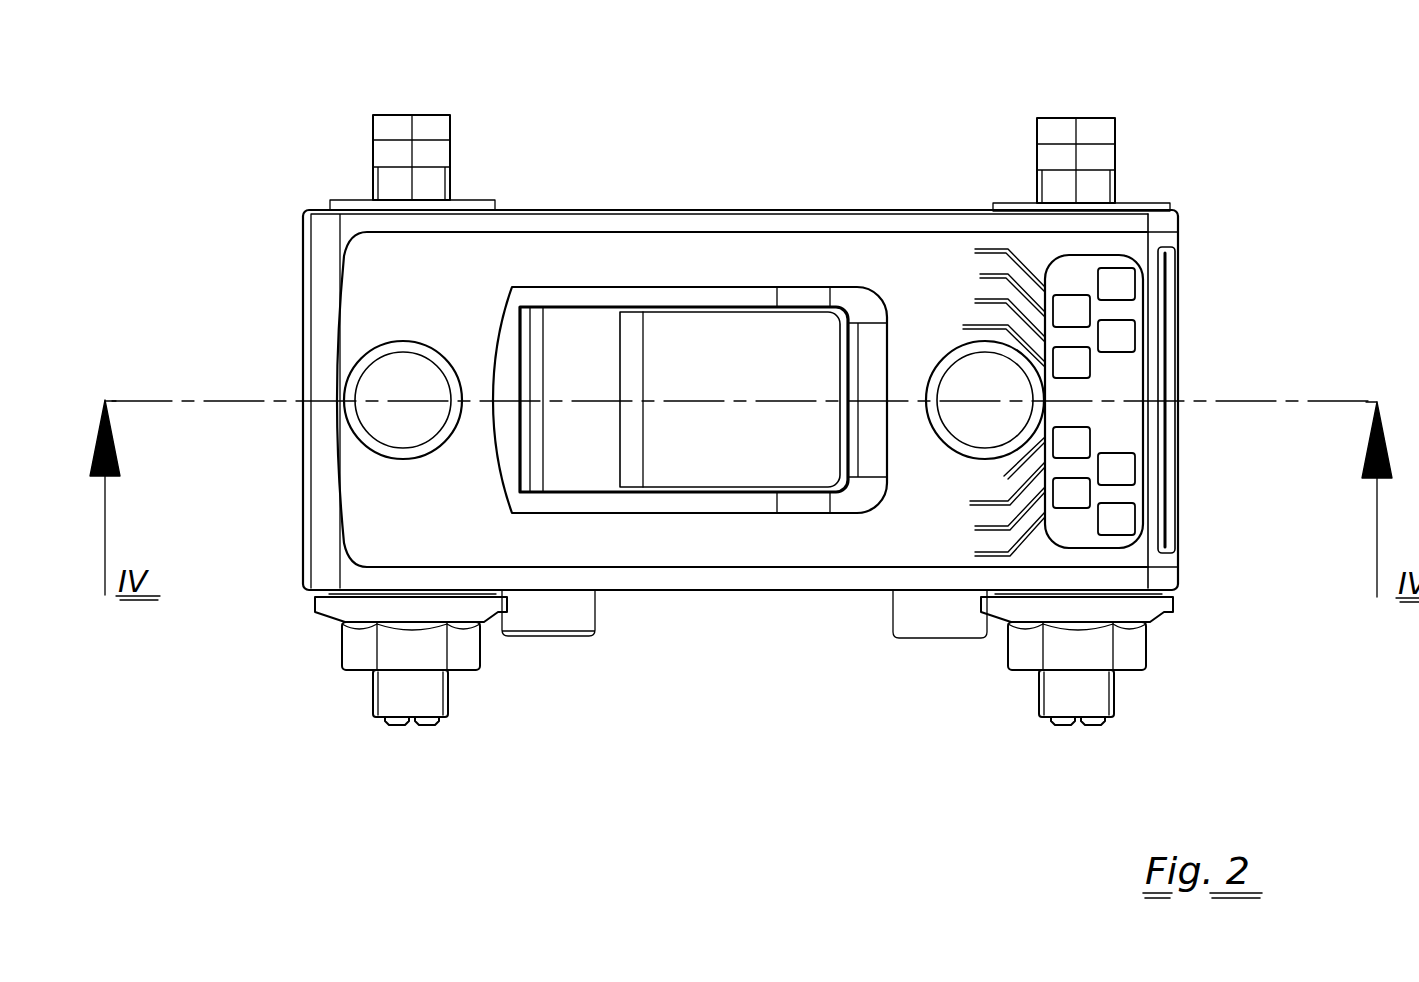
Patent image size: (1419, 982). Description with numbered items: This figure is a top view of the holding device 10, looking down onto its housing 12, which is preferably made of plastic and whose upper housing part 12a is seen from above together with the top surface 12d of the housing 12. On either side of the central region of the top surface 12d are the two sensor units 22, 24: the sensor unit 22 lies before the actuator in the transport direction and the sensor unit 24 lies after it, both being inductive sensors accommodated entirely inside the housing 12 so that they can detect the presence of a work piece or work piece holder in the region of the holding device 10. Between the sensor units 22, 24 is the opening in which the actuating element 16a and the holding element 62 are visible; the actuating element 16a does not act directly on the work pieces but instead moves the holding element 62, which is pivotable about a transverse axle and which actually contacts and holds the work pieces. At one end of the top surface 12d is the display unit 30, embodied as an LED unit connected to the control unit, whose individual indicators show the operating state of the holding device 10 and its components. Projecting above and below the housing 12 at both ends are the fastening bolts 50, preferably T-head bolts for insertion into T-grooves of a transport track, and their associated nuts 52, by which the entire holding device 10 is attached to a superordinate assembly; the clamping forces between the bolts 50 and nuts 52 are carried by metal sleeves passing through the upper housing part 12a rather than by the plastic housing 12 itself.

The holding device 10 is at (1243, 111).
The housing 12 is at (318, 237).
The upper housing part 12a is at (1166, 216).
The top surface 12d is at (413, 276).
The actuating element 16a is at (742, 345).
The sensor unit 22 is at (383, 384).
The sensor unit 24 is at (1005, 392).
The display unit 30 is at (1188, 284).
The fastening bolts 50 is at (1105, 131).
The nuts 52 is at (1130, 652).
The holding element 62 is at (572, 336).